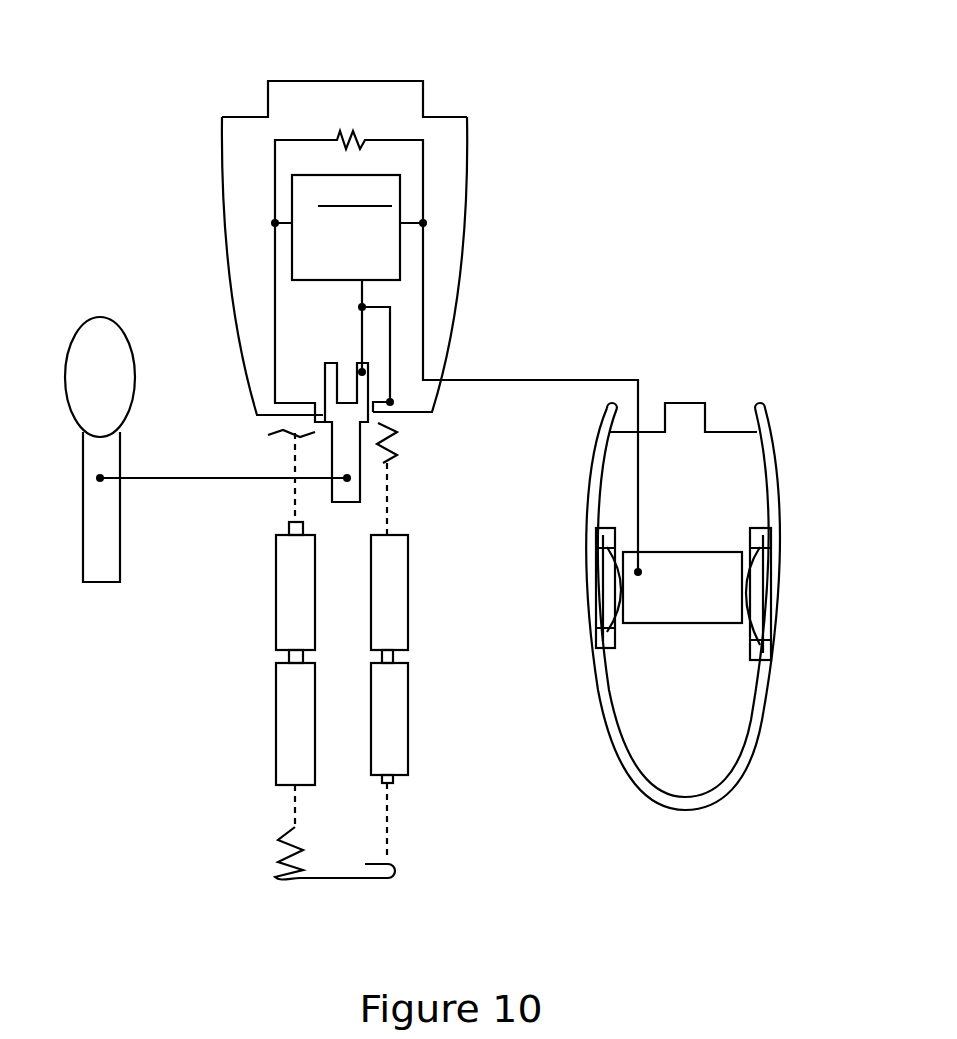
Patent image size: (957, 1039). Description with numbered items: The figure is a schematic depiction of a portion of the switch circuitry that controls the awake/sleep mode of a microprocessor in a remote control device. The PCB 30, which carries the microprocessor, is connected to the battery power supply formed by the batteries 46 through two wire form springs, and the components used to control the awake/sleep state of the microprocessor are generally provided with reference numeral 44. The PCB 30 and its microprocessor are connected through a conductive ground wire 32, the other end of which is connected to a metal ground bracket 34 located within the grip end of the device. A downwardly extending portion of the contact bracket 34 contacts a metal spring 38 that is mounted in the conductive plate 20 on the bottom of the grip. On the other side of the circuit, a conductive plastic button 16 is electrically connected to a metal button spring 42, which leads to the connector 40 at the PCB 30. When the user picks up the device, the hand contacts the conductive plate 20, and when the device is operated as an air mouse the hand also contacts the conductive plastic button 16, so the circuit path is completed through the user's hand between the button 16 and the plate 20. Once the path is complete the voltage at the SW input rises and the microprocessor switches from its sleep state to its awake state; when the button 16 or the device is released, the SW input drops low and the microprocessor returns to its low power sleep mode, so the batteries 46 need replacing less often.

The PCB 30 is at (397, 80).
The awake/sleep control components 44 is at (398, 200).
The conductive ground wire 32 is at (539, 381).
The connector 40 is at (360, 491).
The conductive plastic button 16 is at (98, 317).
The metal button spring 42 is at (83, 549).
The batteries 46 is at (435, 716).
The conductive plate 20 is at (778, 455).
The metal spring 38 is at (745, 576).
The metal ground bracket 34 is at (705, 624).